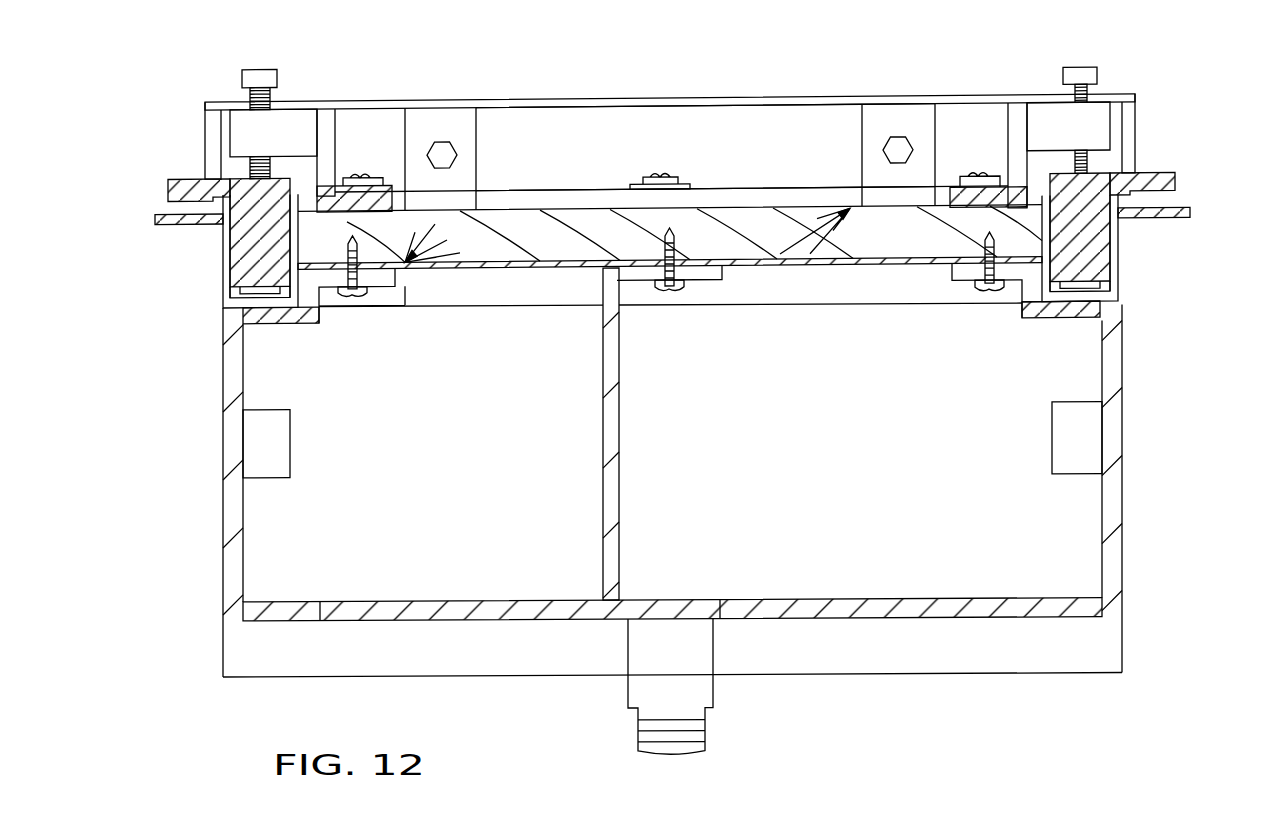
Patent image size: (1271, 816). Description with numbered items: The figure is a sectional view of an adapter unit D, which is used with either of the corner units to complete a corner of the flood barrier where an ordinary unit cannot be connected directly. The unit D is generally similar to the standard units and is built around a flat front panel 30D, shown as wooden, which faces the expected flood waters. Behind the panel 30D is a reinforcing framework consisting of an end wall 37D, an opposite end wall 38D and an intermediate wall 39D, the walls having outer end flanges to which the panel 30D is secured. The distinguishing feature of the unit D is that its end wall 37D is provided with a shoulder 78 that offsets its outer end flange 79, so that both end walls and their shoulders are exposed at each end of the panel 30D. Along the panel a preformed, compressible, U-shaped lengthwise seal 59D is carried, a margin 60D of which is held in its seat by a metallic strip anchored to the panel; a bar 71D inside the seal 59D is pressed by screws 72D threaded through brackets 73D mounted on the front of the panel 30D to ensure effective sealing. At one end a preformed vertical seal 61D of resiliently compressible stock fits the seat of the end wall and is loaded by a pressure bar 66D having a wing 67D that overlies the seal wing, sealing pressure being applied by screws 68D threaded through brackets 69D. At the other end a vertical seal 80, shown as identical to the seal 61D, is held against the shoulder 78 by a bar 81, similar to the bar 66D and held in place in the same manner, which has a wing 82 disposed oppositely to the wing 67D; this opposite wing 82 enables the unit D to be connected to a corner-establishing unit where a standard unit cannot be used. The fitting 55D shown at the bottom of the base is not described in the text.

The lengthwise seal 59D is at (590, 103).
The seal margin 60D is at (213, 126).
The bar 71D is at (748, 127).
The bracket 73D is at (878, 124).
The screw 72D is at (906, 153).
The bracket 69D is at (1090, 128).
The screw 68D is at (1082, 83).
The wing 82 is at (200, 181).
The wing 67D is at (1167, 193).
The bar 81 is at (245, 278).
The pressure bar 66D is at (1082, 273).
The vertical seal 61D is at (1114, 259).
The vertical seal 80 is at (350, 186).
The front panel 30D is at (560, 275).
The shoulder 78 is at (303, 322).
The outer end flange 79 is at (390, 285).
The end wall 37D is at (236, 546).
The end wall 38D is at (1106, 549).
The intermediate wall 39D is at (612, 414).
The outlet fitting 55D is at (640, 694).
The unit D is at (794, 705).